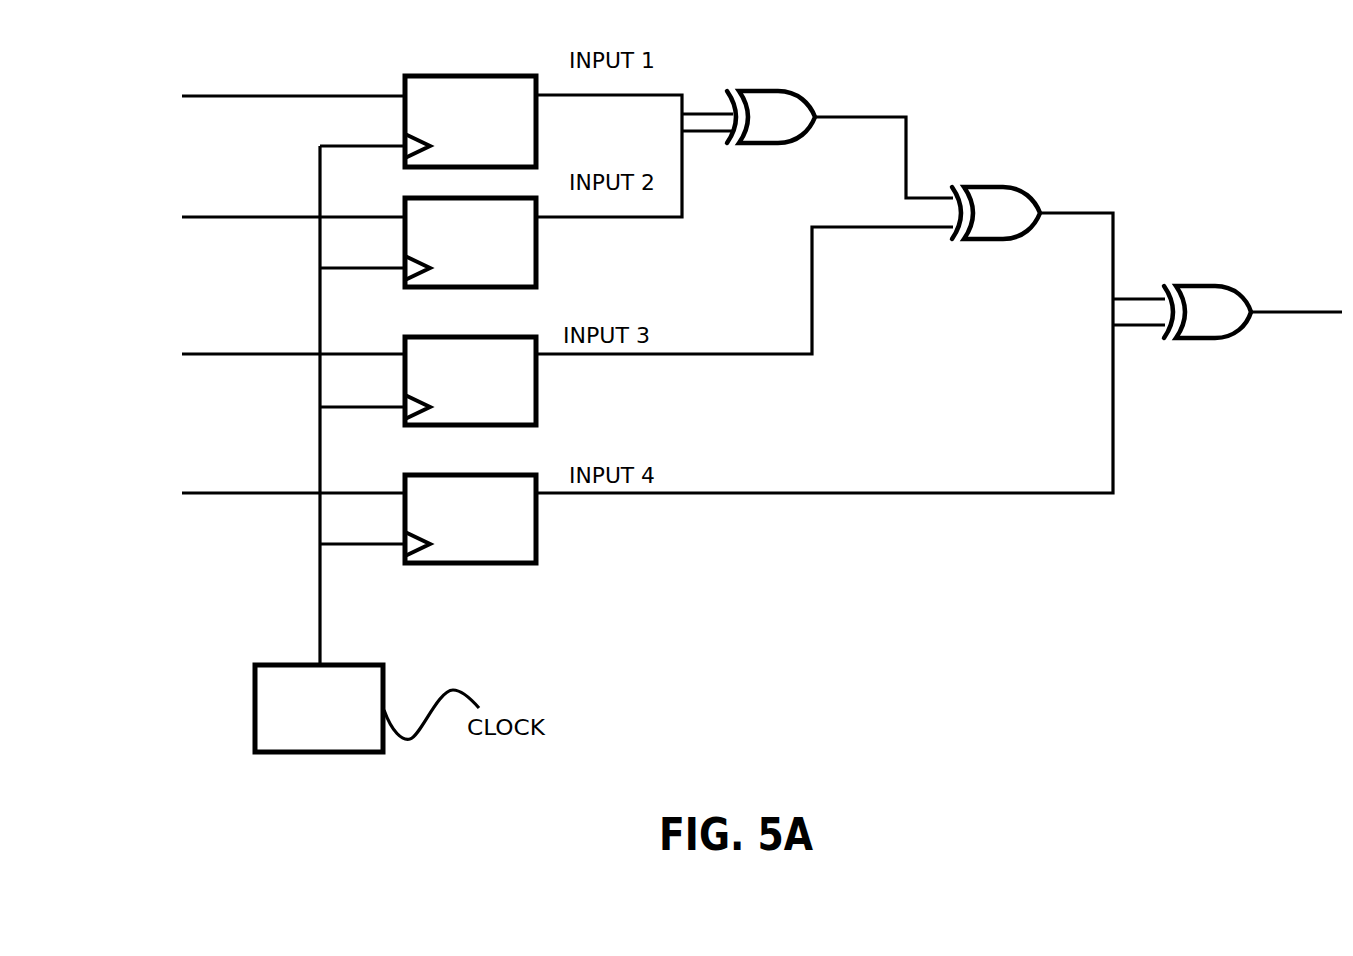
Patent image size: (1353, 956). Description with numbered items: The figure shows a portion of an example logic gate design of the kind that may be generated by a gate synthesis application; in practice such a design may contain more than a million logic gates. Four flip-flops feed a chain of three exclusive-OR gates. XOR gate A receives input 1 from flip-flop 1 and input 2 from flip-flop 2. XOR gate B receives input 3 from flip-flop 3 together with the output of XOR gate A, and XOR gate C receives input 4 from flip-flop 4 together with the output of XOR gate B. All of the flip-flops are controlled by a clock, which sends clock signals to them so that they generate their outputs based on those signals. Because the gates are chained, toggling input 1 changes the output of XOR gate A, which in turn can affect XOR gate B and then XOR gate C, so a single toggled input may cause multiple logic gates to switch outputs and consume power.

The flip-flop 1 is at (470, 121).
The flip-flop 2 is at (470, 242).
The flip-flop 3 is at (470, 381).
The flip-flop 4 is at (470, 519).
The XOR gate A is at (765, 91).
The XOR gate B is at (990, 187).
The XOR gate C is at (1215, 289).